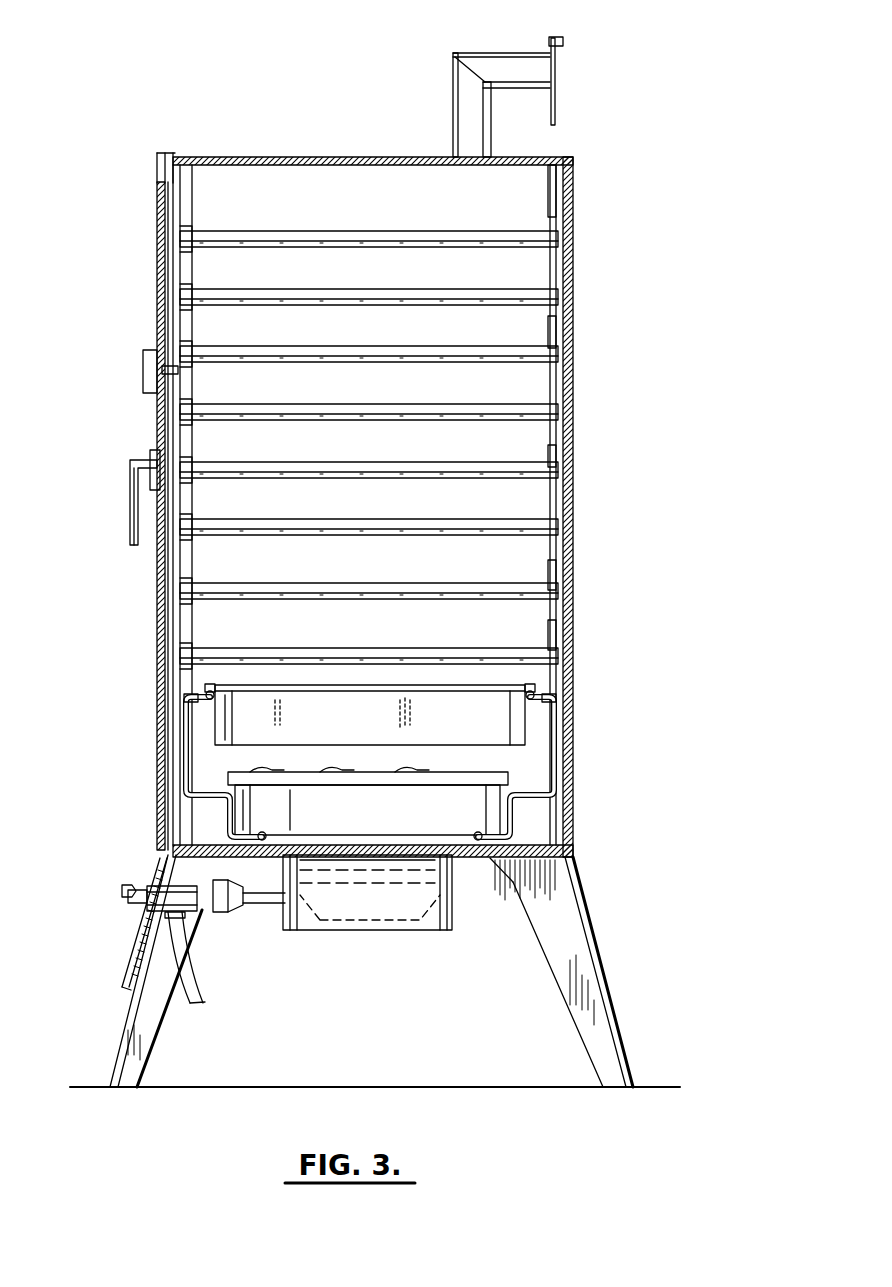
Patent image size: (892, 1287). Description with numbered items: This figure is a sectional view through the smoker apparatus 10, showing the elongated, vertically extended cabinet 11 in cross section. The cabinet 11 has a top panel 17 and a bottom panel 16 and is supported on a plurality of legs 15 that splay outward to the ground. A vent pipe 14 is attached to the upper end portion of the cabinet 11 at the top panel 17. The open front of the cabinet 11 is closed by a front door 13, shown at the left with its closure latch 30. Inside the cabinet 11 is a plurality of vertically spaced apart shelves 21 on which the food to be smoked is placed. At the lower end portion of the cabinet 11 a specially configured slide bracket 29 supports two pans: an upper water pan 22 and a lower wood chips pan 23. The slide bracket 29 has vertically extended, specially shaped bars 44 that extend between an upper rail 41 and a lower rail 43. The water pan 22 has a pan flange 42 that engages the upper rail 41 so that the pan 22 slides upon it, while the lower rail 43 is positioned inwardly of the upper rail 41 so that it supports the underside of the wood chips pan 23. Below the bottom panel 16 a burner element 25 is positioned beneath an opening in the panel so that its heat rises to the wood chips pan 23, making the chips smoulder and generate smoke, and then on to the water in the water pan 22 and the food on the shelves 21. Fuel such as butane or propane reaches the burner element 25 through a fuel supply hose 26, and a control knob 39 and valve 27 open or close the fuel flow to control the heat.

The smoker apparatus 10 is at (282, 66).
The cabinet 11 is at (575, 431).
The front door 13 is at (157, 612).
The vent pipe 14 is at (470, 84).
The legs 15 is at (612, 1004).
The bottom panel 16 is at (492, 870).
The top panel 17 is at (300, 155).
The shelves 21 is at (388, 302).
The water pan 22 is at (330, 727).
The wood chips pan 23 is at (391, 817).
The burner element 25 is at (430, 930).
The fuel supply hose 26 is at (190, 985).
The valve 27 is at (148, 905).
The slide bracket 29 is at (562, 713).
The closure latch 30 is at (132, 497).
The control knob 39 is at (140, 905).
The upper rail 41 is at (565, 698).
The pan flange 42 is at (210, 690).
The lower rail 43 is at (262, 832).
The bars 44 is at (562, 741).